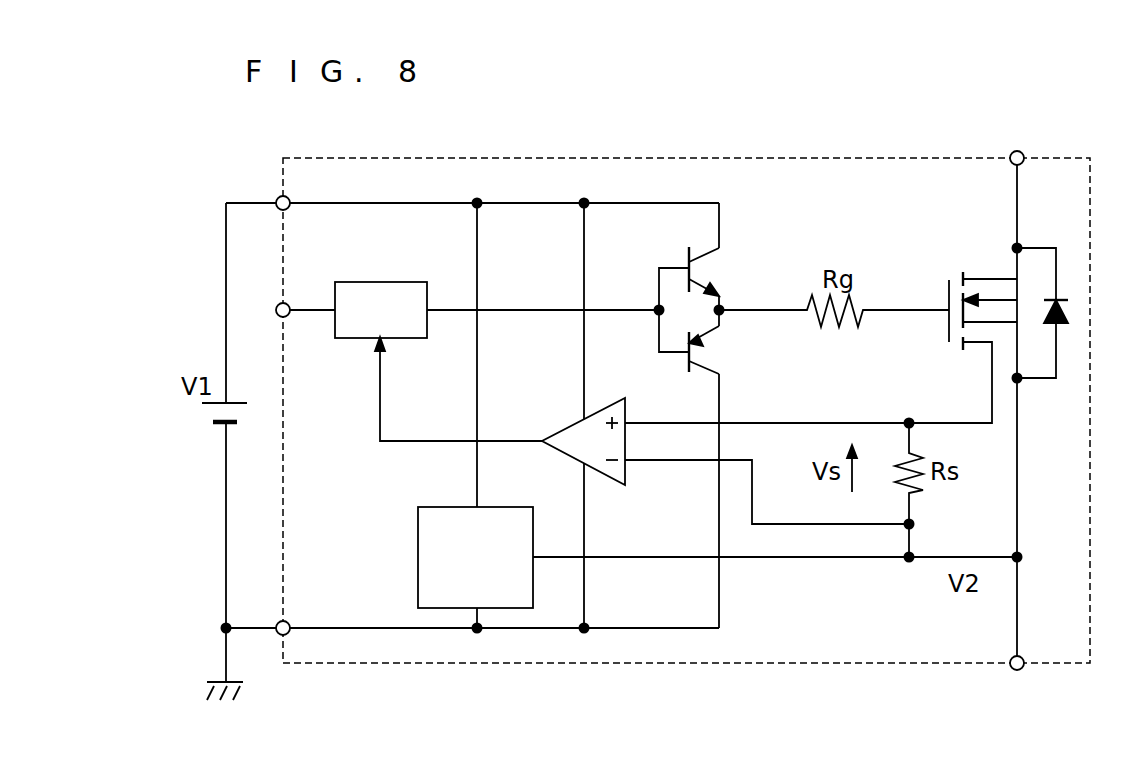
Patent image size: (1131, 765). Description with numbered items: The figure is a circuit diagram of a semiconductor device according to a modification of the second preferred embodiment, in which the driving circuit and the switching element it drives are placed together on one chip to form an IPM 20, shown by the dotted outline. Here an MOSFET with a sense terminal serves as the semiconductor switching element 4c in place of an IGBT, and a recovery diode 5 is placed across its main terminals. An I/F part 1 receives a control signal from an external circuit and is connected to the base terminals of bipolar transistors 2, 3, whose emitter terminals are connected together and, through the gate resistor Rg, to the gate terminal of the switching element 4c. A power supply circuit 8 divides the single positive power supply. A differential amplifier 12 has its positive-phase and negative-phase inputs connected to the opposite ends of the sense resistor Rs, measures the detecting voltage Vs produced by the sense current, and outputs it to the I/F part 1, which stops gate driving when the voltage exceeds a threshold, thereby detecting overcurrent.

The I/F part 1 is at (408, 282).
The bipolar transistor 2 is at (712, 266).
The bipolar transistor 3 is at (712, 350).
The semiconductor switching element 4c is at (955, 277).
The recovery diode 5 is at (1068, 316).
The power supply circuit 8 is at (452, 506).
The differential amplifier 12 is at (613, 398).
The IPM 20 is at (566, 664).